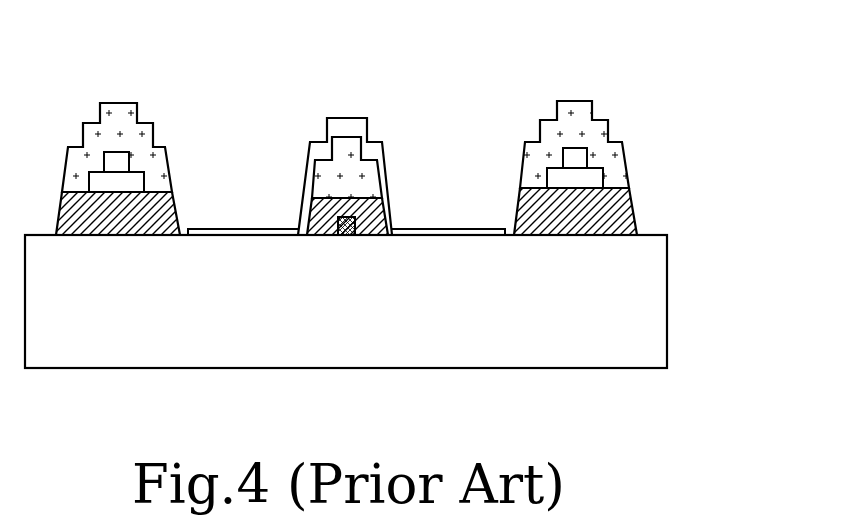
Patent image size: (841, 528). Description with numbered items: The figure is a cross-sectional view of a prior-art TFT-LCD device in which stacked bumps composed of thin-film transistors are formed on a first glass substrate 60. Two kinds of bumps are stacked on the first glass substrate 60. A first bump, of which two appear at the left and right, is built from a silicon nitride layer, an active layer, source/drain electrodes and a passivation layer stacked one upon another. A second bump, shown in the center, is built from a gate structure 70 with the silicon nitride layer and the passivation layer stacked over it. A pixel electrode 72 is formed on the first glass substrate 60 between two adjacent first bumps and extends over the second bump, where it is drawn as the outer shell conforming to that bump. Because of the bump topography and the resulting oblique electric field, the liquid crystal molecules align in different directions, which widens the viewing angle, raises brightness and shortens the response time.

The first glass substrate 60 is at (668, 297).
The gate structure 70 is at (343, 235).
The pixel electrode 72 is at (348, 127).